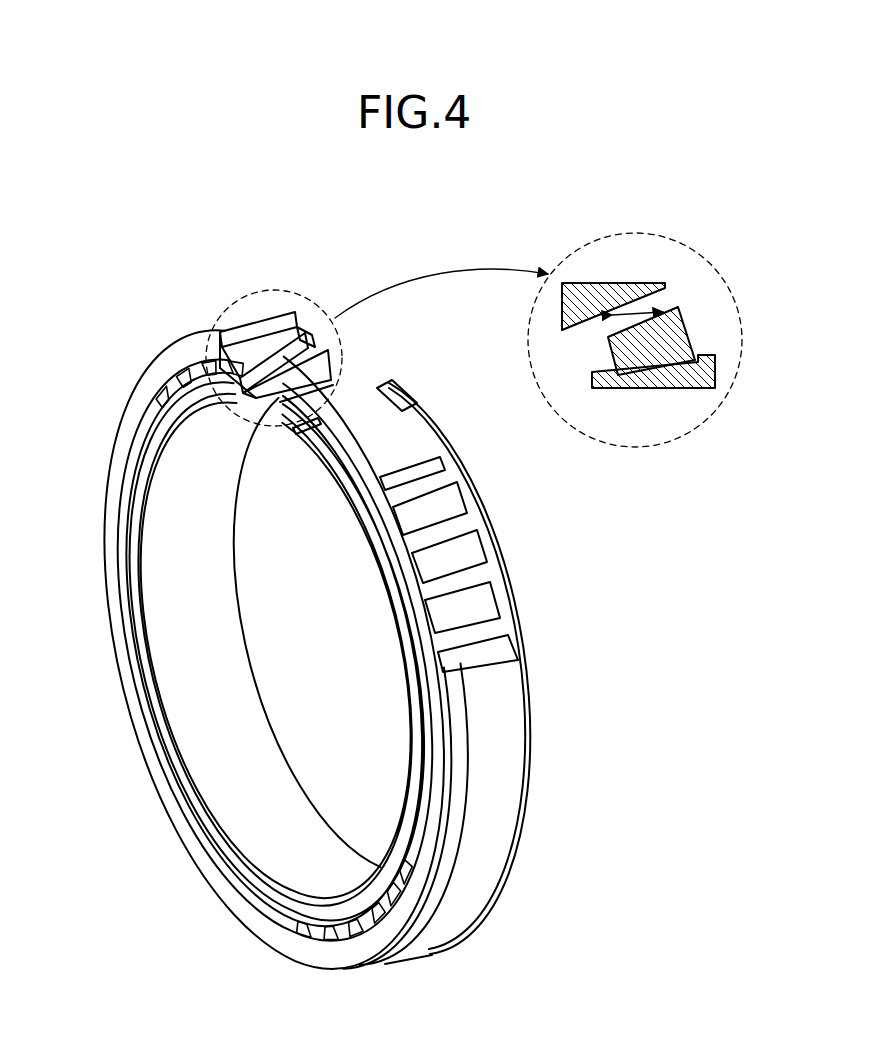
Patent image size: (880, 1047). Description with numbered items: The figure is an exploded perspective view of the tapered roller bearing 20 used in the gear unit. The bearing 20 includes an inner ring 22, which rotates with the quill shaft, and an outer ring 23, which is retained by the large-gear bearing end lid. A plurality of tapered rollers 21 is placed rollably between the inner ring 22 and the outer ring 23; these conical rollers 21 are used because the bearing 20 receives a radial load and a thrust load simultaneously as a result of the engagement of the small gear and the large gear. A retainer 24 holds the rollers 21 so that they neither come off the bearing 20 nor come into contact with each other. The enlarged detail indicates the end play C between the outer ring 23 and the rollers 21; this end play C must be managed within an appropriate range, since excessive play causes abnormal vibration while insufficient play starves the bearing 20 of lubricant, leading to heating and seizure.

The bearing 20 is at (298, 272).
The rollers 21 is at (407, 517).
The inner ring 22 is at (180, 470).
The outer ring 23 is at (243, 340).
The retainer 24 is at (420, 593).
The end play C is at (635, 312).